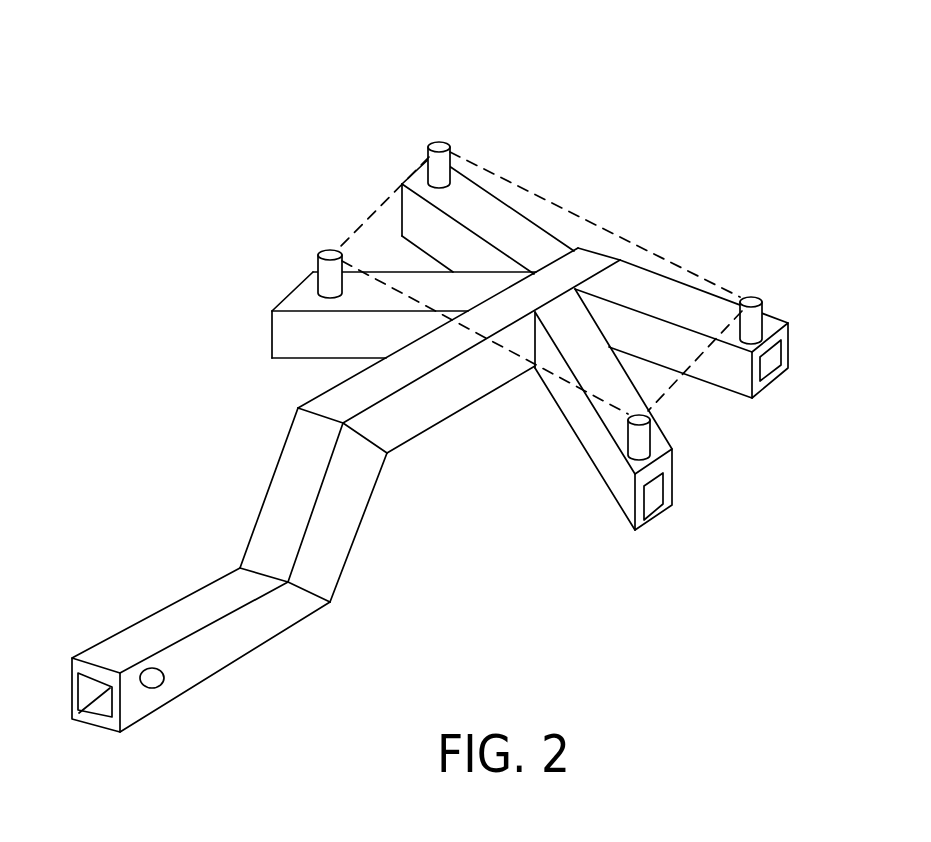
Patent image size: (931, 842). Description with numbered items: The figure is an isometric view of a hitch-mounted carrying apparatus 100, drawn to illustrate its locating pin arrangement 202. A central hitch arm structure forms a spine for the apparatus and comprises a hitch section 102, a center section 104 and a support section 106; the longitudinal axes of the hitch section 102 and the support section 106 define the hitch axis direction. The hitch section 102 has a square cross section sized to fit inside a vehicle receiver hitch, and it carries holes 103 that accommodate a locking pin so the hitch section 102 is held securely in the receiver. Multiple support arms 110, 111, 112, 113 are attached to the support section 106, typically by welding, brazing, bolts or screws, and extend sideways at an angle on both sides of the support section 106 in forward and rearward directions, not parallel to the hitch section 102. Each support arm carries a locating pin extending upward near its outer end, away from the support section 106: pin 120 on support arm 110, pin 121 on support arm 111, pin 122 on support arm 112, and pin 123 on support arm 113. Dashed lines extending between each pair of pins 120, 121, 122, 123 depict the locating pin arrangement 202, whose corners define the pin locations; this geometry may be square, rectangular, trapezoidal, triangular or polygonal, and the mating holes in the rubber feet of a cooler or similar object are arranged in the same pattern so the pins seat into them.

The hitch-mounted carrier 100 is at (288, 85).
The hitch section 102 is at (165, 628).
The holes 103 is at (163, 676).
The center section 104 is at (290, 500).
The support section 106 is at (400, 427).
The support arm 110 is at (285, 345).
The support arm 111 is at (470, 199).
The support arm 112 is at (713, 313).
The support arm 113 is at (573, 415).
The pin 120 is at (317, 273).
The pin 121 is at (427, 153).
The pin 122 is at (755, 322).
The pin 123 is at (645, 433).
The locating pin arrangement 202 is at (582, 213).